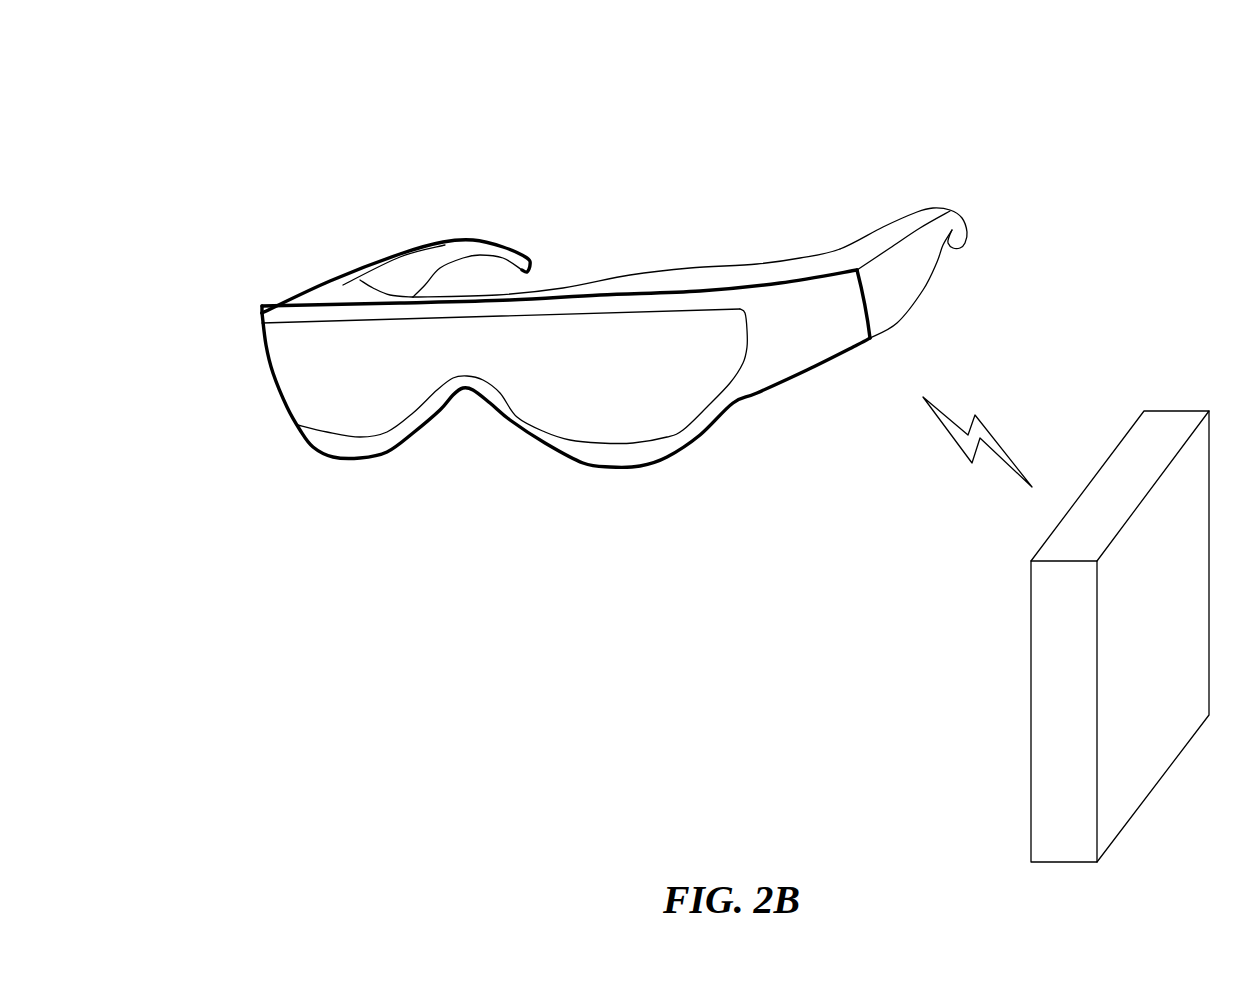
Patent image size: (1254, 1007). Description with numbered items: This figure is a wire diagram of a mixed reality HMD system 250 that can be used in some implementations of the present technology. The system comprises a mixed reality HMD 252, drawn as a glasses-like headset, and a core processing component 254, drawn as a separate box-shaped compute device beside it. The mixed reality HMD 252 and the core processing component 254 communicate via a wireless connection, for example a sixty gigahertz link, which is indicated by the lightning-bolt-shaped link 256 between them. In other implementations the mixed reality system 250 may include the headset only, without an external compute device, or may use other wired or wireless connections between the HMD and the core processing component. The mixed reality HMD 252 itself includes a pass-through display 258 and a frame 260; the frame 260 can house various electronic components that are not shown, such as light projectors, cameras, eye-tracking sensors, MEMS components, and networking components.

The mixed reality HMD system 250 is at (238, 131).
The mixed reality HMD 252 is at (260, 323).
The core processing component 254 is at (1031, 637).
The link 256 is at (967, 453).
The pass-through display 258 is at (745, 312).
The frame 260 is at (897, 278).